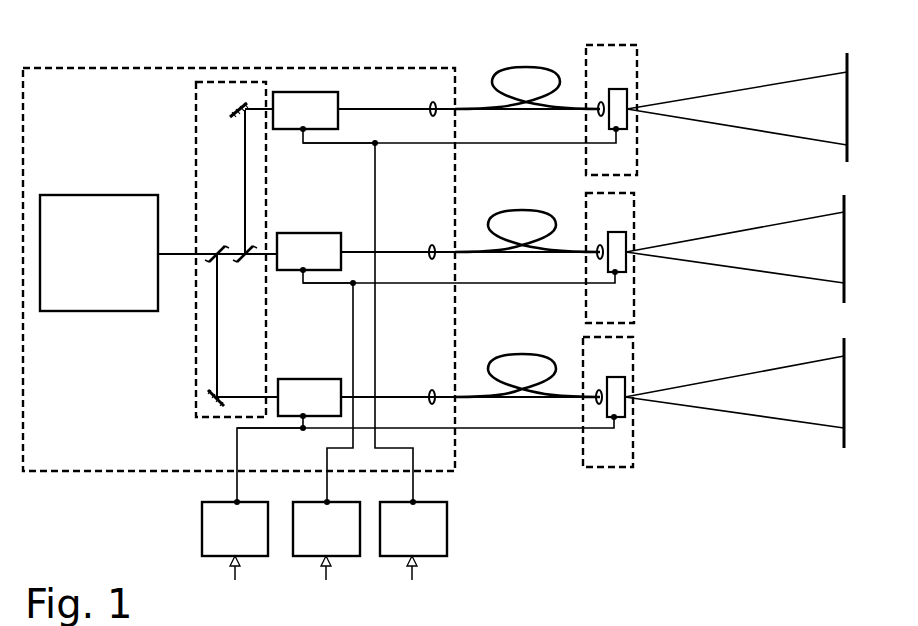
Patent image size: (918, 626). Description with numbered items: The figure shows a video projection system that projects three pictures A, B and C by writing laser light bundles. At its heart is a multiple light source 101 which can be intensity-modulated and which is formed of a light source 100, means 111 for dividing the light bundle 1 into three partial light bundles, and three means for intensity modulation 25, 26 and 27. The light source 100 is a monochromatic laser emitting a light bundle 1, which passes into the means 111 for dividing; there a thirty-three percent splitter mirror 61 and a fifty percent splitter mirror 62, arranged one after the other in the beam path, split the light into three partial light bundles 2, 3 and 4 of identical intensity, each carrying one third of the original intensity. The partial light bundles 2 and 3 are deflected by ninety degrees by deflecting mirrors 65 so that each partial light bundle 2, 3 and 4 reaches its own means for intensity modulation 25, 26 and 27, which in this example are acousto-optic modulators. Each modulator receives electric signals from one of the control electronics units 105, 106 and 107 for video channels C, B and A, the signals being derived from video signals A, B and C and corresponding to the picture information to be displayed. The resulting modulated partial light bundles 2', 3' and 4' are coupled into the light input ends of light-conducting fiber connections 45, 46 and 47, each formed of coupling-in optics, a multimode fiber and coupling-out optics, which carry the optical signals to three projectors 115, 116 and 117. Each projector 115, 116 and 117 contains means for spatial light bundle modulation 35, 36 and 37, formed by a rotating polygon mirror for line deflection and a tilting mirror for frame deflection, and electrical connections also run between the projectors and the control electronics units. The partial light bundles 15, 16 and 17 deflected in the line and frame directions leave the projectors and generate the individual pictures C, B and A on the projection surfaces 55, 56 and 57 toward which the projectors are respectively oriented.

The light bundle 1 is at (165, 252).
The partial light bundle 2 is at (247, 325).
The partial light bundle 3 is at (268, 181).
The partial light bundle 4 is at (273, 220).
The modulated partial light bundle 2' is at (462, 380).
The modulated partial light bundle 3' is at (462, 95).
The modulated partial light bundle 4' is at (463, 237).
The deflected partial light bundle 15 is at (743, 87).
The deflected partial light bundle 16 is at (742, 230).
The deflected partial light bundle 17 is at (747, 372).
The means for intensity modulation 25 is at (305, 110).
The means for intensity modulation 26 is at (309, 251).
The means for intensity modulation 27 is at (309, 397).
The means for spatial light bundle modulation 35 is at (629, 92).
The means for spatial light bundle modulation 36 is at (633, 233).
The means for spatial light bundle modulation 37 is at (626, 383).
The light-conducting fiber connection 45 is at (525, 66).
The light-conducting fiber connection 46 is at (513, 210).
The light-conducting fiber connection 47 is at (518, 353).
The projection surface 55 is at (850, 55).
The projection surface 56 is at (847, 203).
The projection surface 57 is at (848, 340).
The 33-% splitter mirror 61 is at (222, 250).
The 50-% splitter mirror 62 is at (246, 262).
The deflecting mirror 65 is at (236, 111).
The light source 100 is at (99, 253).
The multiple light source 101 is at (270, 68).
The control electronics unit 105 is at (394, 367).
The control electronics unit 106 is at (327, 437).
The control electronics unit 107 is at (240, 510).
The means for dividing the light bundle 111 is at (194, 344).
The projector 115 is at (638, 62).
The projector 116 is at (636, 207).
The projector 117 is at (634, 348).